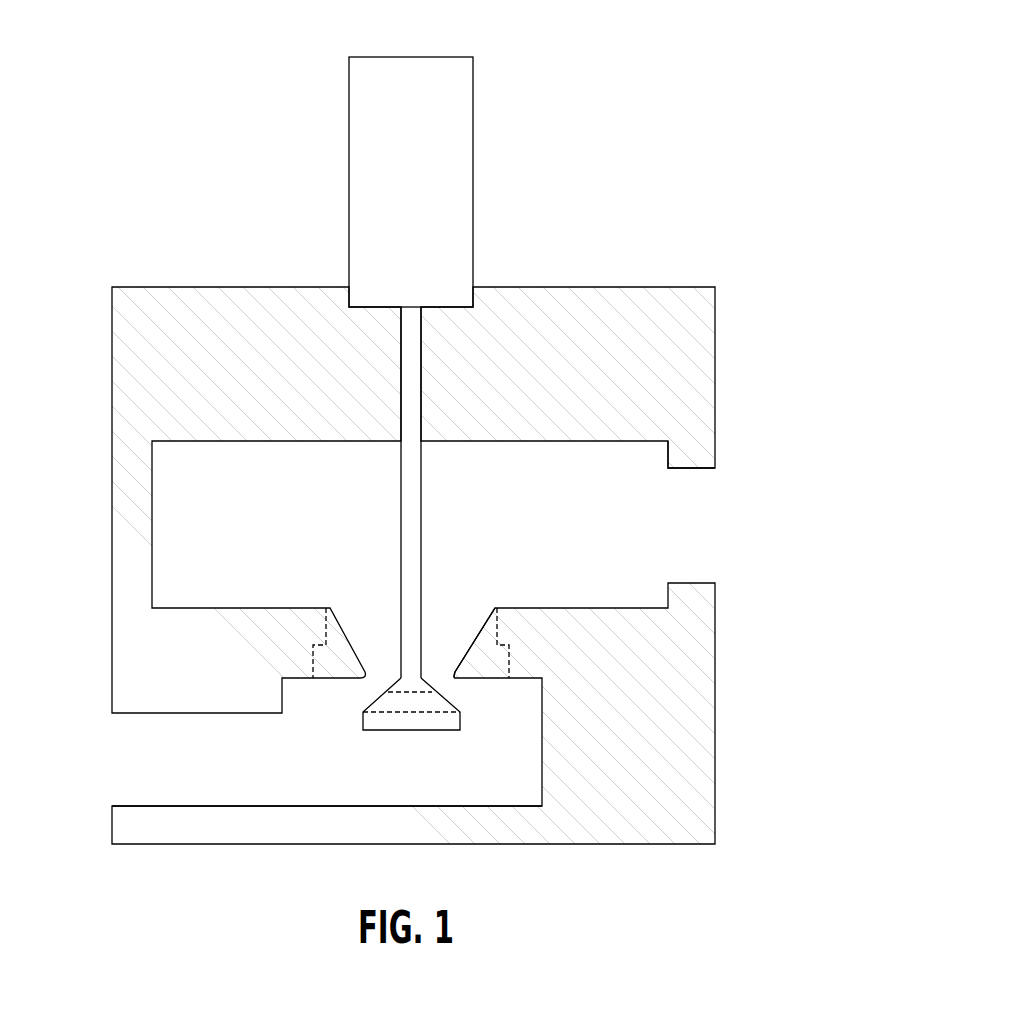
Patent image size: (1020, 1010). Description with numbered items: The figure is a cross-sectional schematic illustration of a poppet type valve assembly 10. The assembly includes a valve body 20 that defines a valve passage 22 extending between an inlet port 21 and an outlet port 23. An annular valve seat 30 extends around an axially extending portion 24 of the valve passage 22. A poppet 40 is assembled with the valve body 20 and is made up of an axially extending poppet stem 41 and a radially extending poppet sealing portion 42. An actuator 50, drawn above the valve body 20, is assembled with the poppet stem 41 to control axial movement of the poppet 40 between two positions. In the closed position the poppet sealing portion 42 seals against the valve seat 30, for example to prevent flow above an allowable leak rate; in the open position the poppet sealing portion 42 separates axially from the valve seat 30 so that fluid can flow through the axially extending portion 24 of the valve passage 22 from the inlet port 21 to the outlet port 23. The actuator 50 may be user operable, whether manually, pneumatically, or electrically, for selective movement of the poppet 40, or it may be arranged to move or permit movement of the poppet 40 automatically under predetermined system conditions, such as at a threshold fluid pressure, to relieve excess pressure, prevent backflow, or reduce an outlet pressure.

The poppet type valve assembly 10 is at (730, 105).
The valve body 20 is at (690, 343).
The inlet port 21 is at (135, 806).
The valve passage 22 is at (465, 608).
The outlet port 23 is at (692, 468).
The axially extending portion 24 is at (435, 670).
The valve seat 30 is at (485, 660).
The poppet 40 is at (465, 551).
The poppet stem 41 is at (413, 468).
The poppet sealing portion 42 is at (367, 702).
The actuator 50 is at (455, 115).